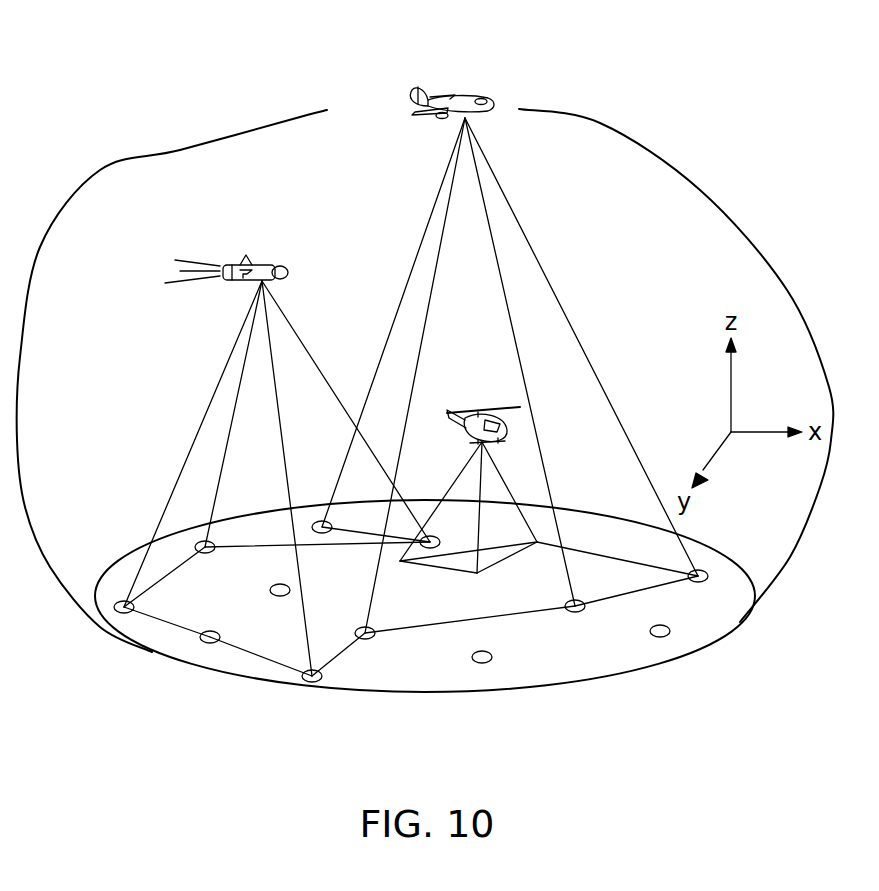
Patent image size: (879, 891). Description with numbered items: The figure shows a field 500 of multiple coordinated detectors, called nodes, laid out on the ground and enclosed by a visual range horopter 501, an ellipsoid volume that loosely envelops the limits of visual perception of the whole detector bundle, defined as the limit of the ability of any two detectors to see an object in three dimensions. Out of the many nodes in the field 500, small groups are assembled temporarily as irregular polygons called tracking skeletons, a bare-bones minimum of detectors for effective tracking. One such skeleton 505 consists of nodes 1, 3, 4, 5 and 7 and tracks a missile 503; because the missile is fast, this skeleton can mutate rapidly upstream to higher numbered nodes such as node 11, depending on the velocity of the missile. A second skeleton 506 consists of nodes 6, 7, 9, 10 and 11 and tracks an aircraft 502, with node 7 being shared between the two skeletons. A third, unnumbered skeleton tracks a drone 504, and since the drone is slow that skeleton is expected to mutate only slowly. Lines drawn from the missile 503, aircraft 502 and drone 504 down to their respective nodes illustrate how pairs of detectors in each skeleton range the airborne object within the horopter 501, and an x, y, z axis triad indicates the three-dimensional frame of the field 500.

The field of coordinated detectors 500 is at (568, 653).
The visual range horopter 501 is at (178, 150).
The aircraft 502 is at (448, 90).
The missile 503 is at (244, 262).
The drone 504 is at (483, 410).
The tracking skeleton 505 is at (182, 626).
The tracking skeleton 506 is at (508, 603).
The node 1 is at (318, 672).
The node 3 is at (213, 632).
The node 4 is at (133, 605).
The node 5 is at (209, 543).
The node 6 is at (332, 527).
The node 7 is at (438, 541).
The node 9 is at (703, 581).
The node 10 is at (580, 611).
The node 11 is at (370, 639).